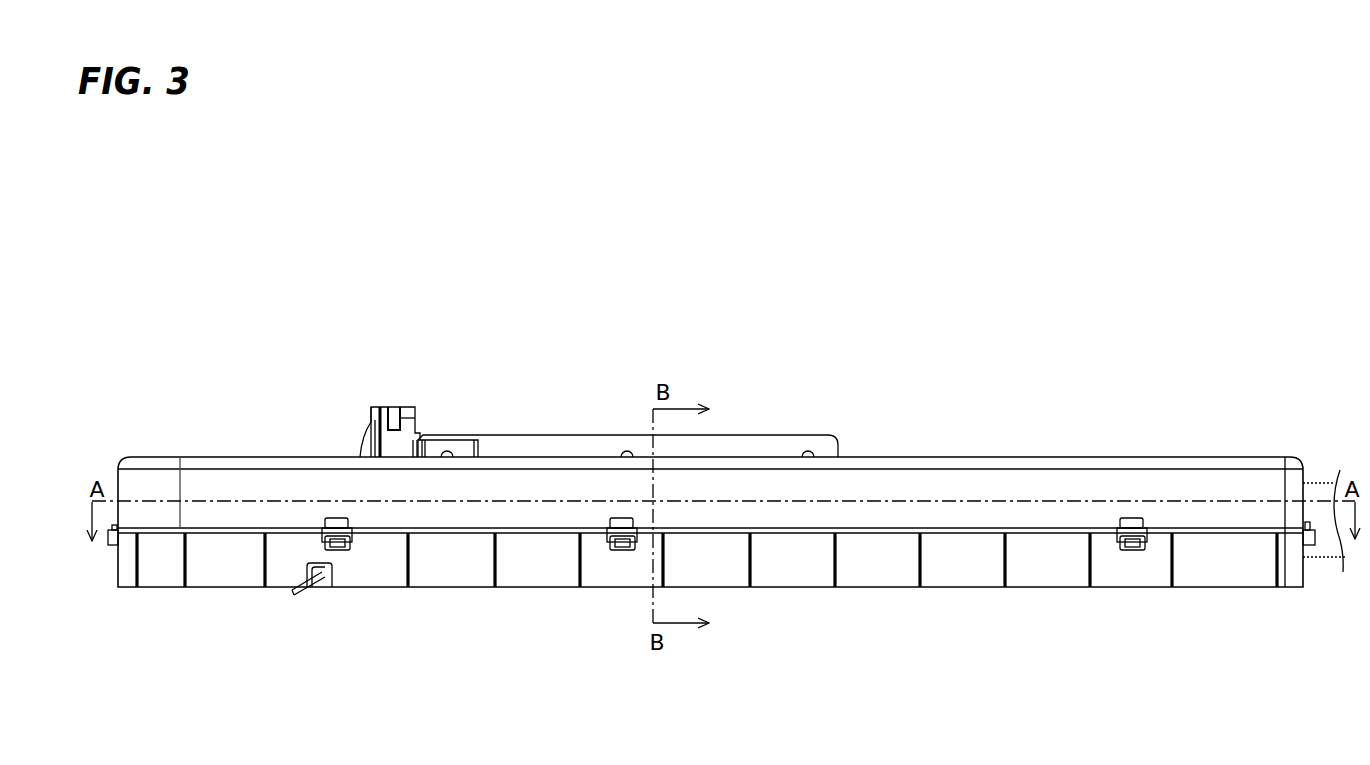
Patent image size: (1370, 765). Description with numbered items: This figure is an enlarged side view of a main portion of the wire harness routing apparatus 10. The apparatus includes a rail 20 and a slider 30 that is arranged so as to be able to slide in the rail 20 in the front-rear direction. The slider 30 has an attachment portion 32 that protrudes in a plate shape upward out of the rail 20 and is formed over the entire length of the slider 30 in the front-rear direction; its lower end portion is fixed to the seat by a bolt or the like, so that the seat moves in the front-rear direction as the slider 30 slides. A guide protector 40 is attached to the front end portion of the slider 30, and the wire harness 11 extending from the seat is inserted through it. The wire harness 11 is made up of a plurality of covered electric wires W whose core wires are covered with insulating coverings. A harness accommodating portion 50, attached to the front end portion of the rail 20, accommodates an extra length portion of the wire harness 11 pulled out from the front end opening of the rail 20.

The wire harness routing apparatus 10 is at (808, 382).
The rail 20 is at (1325, 547).
The slider 30 is at (534, 420).
The attachment portion 32 is at (495, 450).
The guide protector 40 is at (392, 382).
The harness accommodating portion 50 is at (143, 447).
The covered electric wire W is at (319, 621).
The wire harness 11 is at (302, 595).